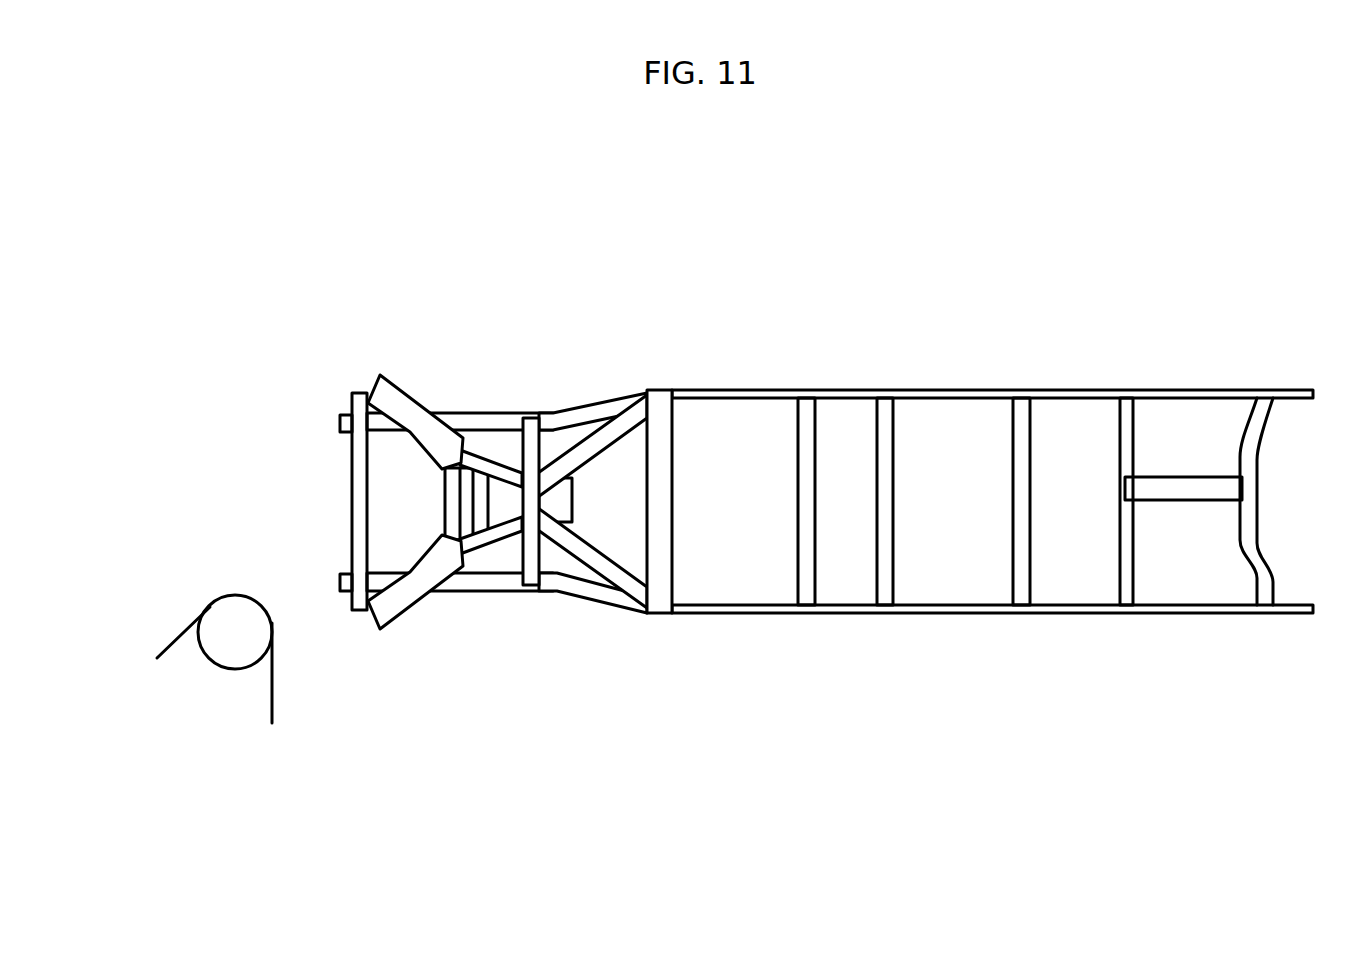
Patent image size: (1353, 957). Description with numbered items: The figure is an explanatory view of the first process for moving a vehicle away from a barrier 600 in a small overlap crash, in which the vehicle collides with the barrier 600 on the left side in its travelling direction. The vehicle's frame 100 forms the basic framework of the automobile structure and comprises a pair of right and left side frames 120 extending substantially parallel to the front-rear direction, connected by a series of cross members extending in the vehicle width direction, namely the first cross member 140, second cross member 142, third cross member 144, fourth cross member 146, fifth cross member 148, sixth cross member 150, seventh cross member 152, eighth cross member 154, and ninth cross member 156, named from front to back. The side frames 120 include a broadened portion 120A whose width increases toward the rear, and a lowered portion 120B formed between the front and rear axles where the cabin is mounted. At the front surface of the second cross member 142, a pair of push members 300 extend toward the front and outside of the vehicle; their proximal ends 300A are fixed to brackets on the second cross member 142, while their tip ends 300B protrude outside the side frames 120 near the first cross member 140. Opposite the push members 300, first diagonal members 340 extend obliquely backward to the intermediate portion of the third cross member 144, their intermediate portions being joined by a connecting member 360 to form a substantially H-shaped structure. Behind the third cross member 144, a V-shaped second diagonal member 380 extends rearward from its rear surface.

The frame 100 is at (980, 484).
The side frames 120 is at (992, 502).
The broadened portion 120A is at (595, 405).
The lowered portion 120B is at (925, 390).
The first cross member 140 is at (352, 452).
The second cross member 142 is at (448, 522).
The third cross member 144 is at (530, 418).
The fourth cross member 146 is at (673, 474).
The fifth cross member 148 is at (798, 563).
The sixth cross member 150 is at (895, 474).
The seventh cross member 152 is at (1012, 563).
The eighth cross member 154 is at (1133, 458).
The ninth cross member 156 is at (1247, 565).
The push members 300 is at (419, 508).
The proximal ends 300A is at (419, 508).
The tip ends 300B is at (380, 382).
The first diagonal members 340 is at (481, 452).
The connecting member 360 is at (478, 502).
The second diagonal member 380 is at (630, 410).
The barrier 600 is at (230, 670).